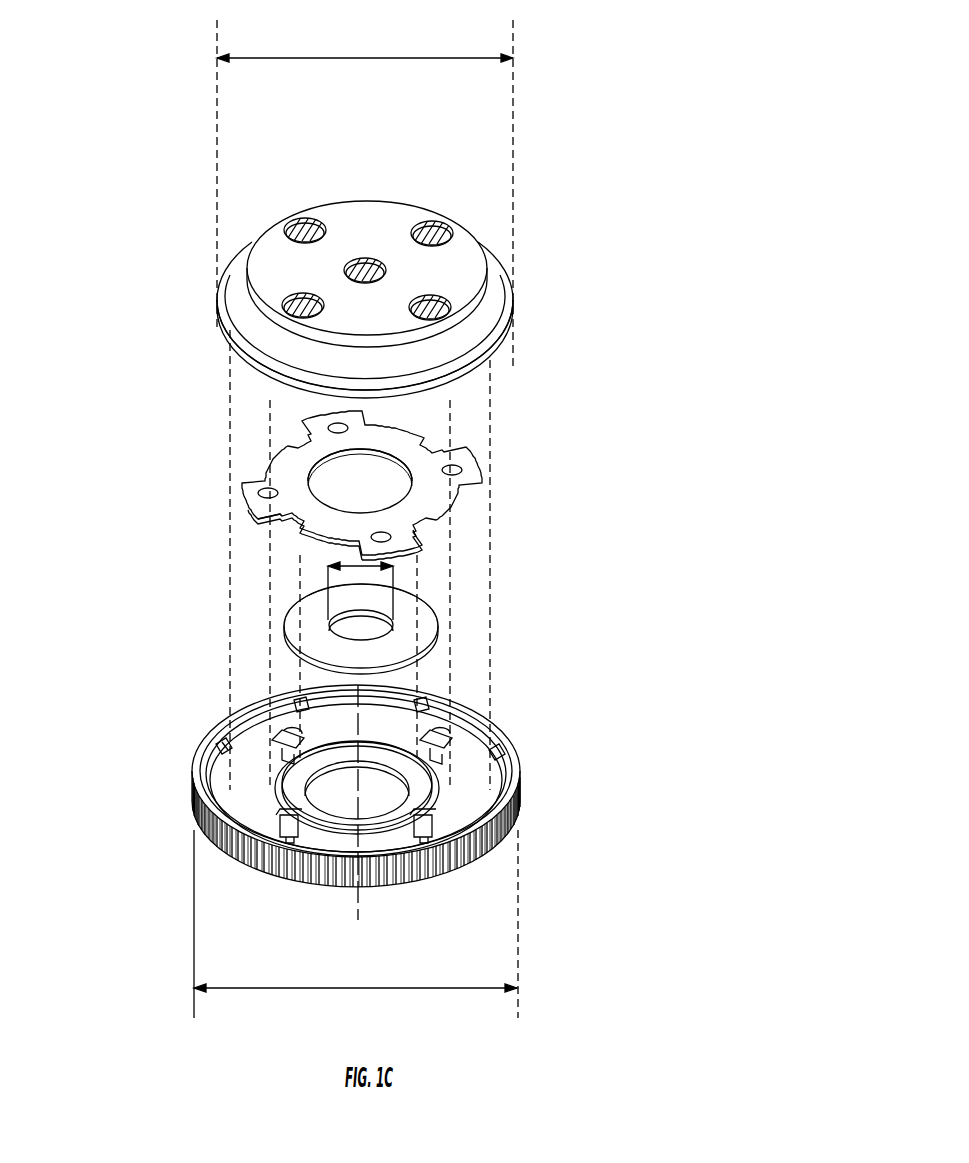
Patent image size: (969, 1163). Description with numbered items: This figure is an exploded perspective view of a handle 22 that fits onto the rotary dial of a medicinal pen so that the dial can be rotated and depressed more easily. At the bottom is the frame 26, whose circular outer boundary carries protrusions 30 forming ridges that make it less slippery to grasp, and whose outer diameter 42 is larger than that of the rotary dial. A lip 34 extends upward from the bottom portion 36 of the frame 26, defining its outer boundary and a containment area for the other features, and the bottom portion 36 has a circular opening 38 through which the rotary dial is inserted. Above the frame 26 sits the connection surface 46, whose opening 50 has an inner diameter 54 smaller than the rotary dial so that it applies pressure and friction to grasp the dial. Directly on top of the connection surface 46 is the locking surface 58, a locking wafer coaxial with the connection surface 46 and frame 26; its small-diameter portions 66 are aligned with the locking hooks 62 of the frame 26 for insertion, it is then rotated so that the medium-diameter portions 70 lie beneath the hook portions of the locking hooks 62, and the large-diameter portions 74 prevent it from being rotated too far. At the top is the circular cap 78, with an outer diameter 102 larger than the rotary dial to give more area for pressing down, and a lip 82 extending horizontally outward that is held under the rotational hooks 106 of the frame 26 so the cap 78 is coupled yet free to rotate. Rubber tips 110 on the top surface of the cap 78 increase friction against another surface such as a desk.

The handle 22 is at (160, 650).
The frame 26 is at (403, 819).
The protrusions 30 is at (398, 888).
The lip 34 is at (473, 730).
The bottom portion 36 is at (470, 780).
The opening 38 is at (388, 768).
The outer diameter 42 is at (232, 990).
The connection surface 46 is at (437, 640).
The opening 50 is at (410, 612).
The inner diameter 54 is at (330, 554).
The locking surface 58 is at (430, 442).
The locking hooks 62 is at (437, 847).
The small-diameter portions 66 is at (280, 527).
The medium-diameter portions 70 is at (330, 548).
The large-diameter portions 74 is at (372, 622).
The cap 78 is at (487, 318).
The lip 82 is at (510, 327).
The outer diameter 102 is at (322, 58).
The rotational hooks 106 is at (222, 748).
The rubber tips 110 is at (316, 297).